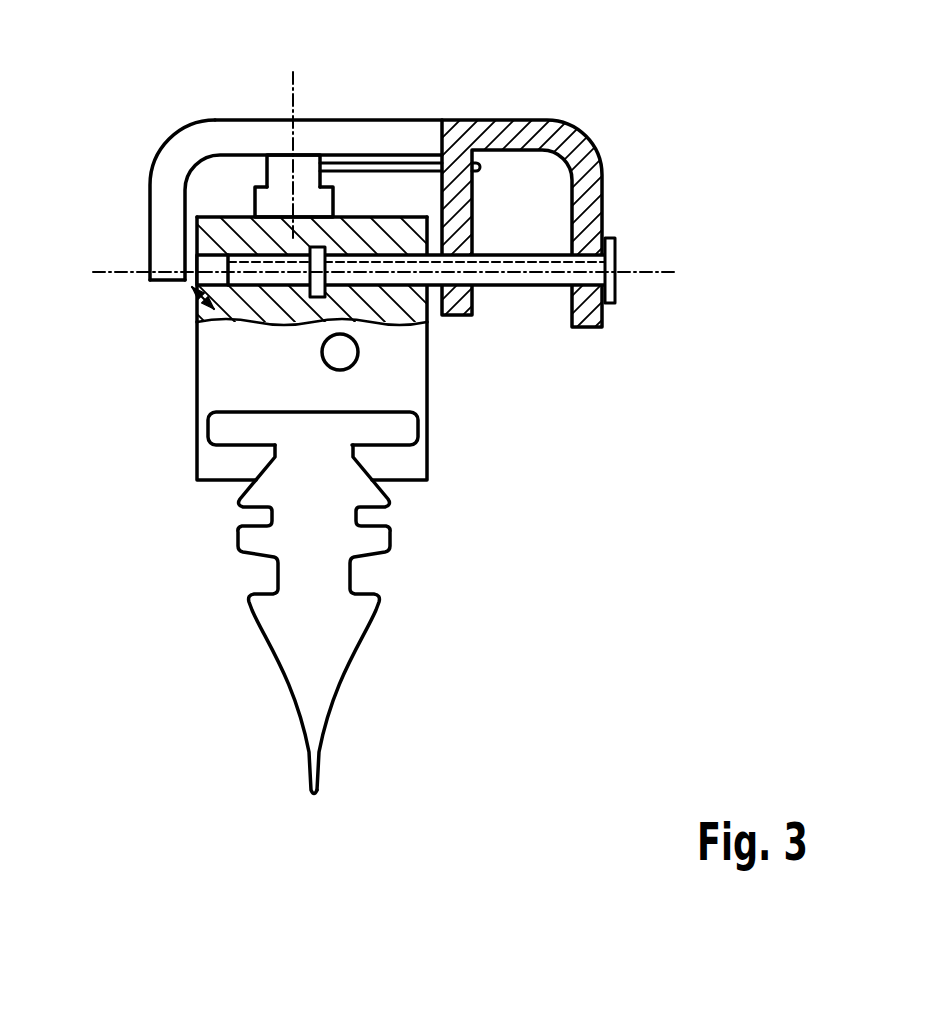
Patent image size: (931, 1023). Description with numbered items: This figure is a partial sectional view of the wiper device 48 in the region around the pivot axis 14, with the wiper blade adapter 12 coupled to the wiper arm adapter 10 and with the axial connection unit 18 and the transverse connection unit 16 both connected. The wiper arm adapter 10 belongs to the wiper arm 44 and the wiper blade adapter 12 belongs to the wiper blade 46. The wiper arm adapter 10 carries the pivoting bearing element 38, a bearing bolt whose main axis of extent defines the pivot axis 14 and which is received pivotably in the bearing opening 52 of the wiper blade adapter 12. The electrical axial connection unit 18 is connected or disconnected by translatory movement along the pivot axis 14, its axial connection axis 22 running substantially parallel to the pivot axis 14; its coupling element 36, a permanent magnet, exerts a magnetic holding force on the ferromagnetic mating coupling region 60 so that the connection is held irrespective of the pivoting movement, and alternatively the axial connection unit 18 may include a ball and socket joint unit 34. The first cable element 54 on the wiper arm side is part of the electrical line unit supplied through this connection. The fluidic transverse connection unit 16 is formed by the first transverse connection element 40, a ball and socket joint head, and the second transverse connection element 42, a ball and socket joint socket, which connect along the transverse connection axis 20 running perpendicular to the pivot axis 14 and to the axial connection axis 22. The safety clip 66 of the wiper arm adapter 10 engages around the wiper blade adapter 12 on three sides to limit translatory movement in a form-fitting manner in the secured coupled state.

The wiper arm adapter 10 is at (453, 97).
The wiper blade adapter 12 is at (470, 432).
The pivot axis 14 is at (672, 270).
The fluidic transverse connection unit 16 is at (340, 190).
The electrical axial connection unit 18 is at (190, 289).
The transverse connection axis 20 is at (293, 72).
The axial connection axis 22 is at (112, 270).
The ball and socket joint unit 34 is at (226, 317).
The coupling element 36 is at (325, 287).
The pivoting bearing element 38 is at (538, 285).
The first transverse connection element 40 is at (278, 162).
The second transverse connection element 42 is at (265, 198).
The wiper arm 44 is at (568, 133).
The wiper blade 46 is at (255, 443).
The wiper device 48 is at (622, 522).
The bearing opening 52 is at (276, 303).
The first cable element 54 is at (538, 248).
The mating coupling region 60 is at (370, 217).
The safety clip 66 is at (163, 197).